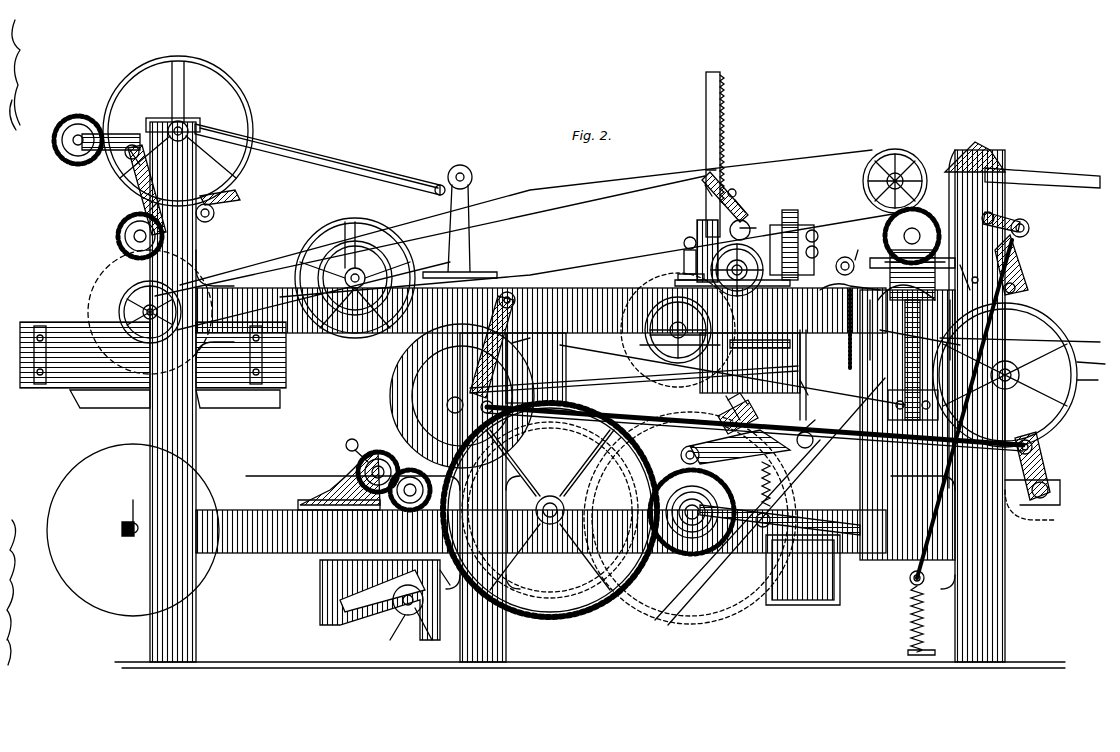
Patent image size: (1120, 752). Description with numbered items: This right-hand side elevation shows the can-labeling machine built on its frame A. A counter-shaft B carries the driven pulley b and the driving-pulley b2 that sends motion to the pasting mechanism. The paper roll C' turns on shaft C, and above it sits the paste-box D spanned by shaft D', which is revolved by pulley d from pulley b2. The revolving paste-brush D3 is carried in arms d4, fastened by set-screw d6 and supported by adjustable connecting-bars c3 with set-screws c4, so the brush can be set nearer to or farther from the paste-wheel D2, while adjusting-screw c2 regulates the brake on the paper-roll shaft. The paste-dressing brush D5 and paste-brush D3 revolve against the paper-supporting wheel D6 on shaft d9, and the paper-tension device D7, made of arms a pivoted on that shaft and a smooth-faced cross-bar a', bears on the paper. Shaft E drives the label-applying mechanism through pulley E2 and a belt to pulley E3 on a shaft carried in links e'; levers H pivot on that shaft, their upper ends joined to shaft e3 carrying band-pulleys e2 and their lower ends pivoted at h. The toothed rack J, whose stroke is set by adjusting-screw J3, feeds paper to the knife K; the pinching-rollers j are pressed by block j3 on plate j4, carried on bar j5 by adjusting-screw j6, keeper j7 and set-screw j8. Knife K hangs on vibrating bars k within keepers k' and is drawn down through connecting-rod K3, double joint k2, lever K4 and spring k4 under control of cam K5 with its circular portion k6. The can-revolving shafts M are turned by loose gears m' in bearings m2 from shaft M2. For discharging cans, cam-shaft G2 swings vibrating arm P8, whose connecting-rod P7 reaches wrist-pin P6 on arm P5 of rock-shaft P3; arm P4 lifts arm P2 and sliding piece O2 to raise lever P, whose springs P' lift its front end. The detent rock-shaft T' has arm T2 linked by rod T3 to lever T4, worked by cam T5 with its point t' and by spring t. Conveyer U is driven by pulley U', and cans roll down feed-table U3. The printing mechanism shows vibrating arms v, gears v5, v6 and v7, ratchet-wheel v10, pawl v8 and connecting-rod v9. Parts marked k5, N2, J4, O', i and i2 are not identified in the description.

The frame A is at (575, 390).
The counter-shaft B is at (350, 290).
The driven pulley b is at (363, 290).
The driving-pulley b2 is at (337, 235).
The paper-roll shaft C is at (130, 511).
The paper roll C' is at (133, 527).
The paste-box D is at (153, 365).
The paste-box shaft D' is at (114, 312).
The paste-wheel D2 is at (128, 262).
The revolving paste-brush D3 is at (118, 225).
The paste-dressing brush D5 is at (78, 130).
The paper-supporting wheel D6 is at (178, 121).
The paper-tension device D7 is at (317, 159).
The pulley d is at (138, 298).
The arms d4 is at (132, 238).
The set-screw d6 is at (215, 213).
The shaft of paper-supporting wheel d9 is at (174, 126).
The adjusting-screw c2 is at (148, 190).
The adjustable connecting-bar c3 is at (132, 170).
The set-screw c4 is at (120, 158).
The arms of paper-tension device a is at (319, 158).
The cross-bar a' is at (460, 221).
The cam-shaft G2 is at (452, 405).
The vibrating arm P8 is at (533, 351).
The levers H is at (634, 379).
The connecting-rod P7 is at (752, 424).
The driving-shaft of label-applying mechanism E is at (672, 316).
The pulley E2 is at (732, 368).
The pulley E3 is at (811, 366).
The links e' is at (760, 352).
The band-pulleys e2 is at (838, 255).
The shaft e3 is at (857, 246).
The pivot shaft h is at (606, 452).
The knife K is at (808, 260).
The connecting-rod K3 is at (783, 381).
The lever K4 is at (690, 518).
The cam K5 is at (700, 506).
The vibrating connecting-bars k is at (806, 430).
The keepers k' is at (729, 443).
The double-joint connection k2 is at (780, 498).
The spring k4 is at (803, 537).
The spring k5 is at (756, 484).
The major circular portion of cam k6 is at (692, 496).
The block N2 is at (790, 410).
The toothed rack J is at (722, 100).
The adjusting-screw J3 is at (732, 401).
The post J4 is at (690, 224).
The pinching-rollers j is at (752, 230).
The adjustable pressing-block j3 is at (752, 212).
The vertically-moving plate j4 is at (750, 195).
The horizontal bar j5 is at (704, 188).
The adjusting-screw j6 is at (704, 170).
The keeper j7 is at (742, 190).
The set-screw j8 is at (738, 190).
The can-revolving shaft M is at (1024, 339).
The shaft M2 is at (870, 182).
The loose gears m' is at (908, 314).
The bearings m2 is at (892, 380).
The guide O' is at (910, 322).
The sliding piece O2 is at (932, 361).
The lever P is at (1077, 339).
The springs P' is at (873, 330).
The arm P2 is at (1050, 460).
The rock-shaft P3 is at (1060, 495).
The arm P4 is at (1000, 500).
The arm P5 is at (1048, 490).
The wrist-pin P6 is at (1032, 447).
The rock-shaft T' is at (1016, 215).
The arm T2 is at (1030, 228).
The rod T3 is at (1030, 293).
The lever T4 is at (908, 578).
The cam T5 is at (665, 622).
The spring t is at (923, 620).
The point of cam t' is at (721, 530).
The conveyer U is at (1011, 375).
The pulley U' is at (1093, 381).
The feed-table U3 is at (1022, 165).
The pin i is at (964, 270).
The pin i2 is at (978, 254).
The vibrating arms v is at (418, 585).
The gear v5 is at (410, 488).
The gear v6 is at (355, 474).
The gear v7 is at (380, 597).
The pawl v8 is at (429, 630).
The connecting-rod v9 is at (454, 572).
The ratchet-wheel v10 is at (397, 631).